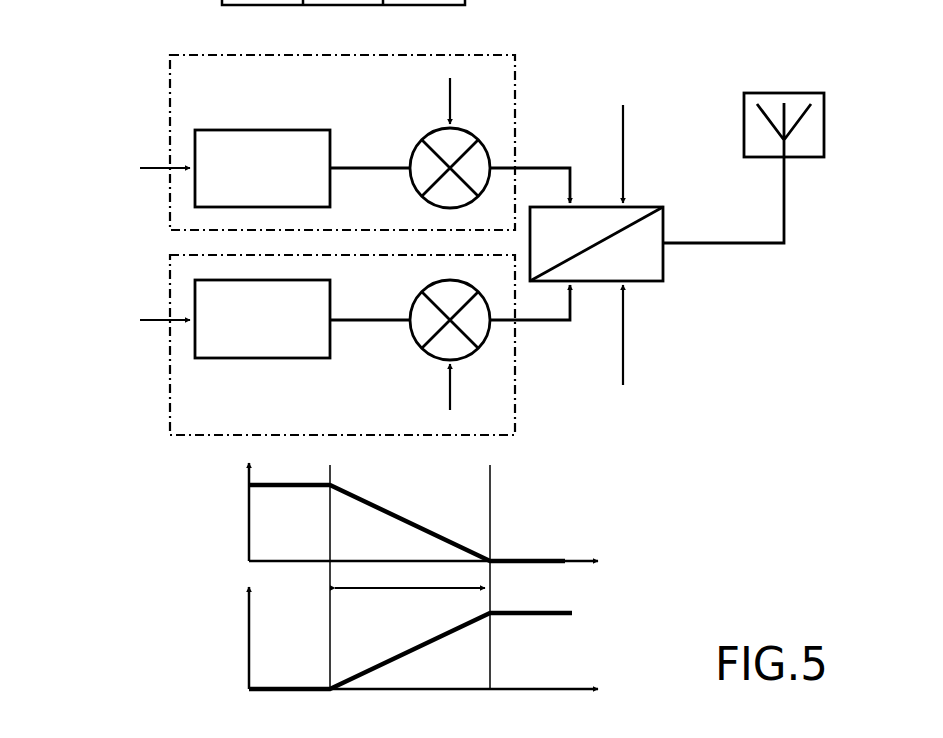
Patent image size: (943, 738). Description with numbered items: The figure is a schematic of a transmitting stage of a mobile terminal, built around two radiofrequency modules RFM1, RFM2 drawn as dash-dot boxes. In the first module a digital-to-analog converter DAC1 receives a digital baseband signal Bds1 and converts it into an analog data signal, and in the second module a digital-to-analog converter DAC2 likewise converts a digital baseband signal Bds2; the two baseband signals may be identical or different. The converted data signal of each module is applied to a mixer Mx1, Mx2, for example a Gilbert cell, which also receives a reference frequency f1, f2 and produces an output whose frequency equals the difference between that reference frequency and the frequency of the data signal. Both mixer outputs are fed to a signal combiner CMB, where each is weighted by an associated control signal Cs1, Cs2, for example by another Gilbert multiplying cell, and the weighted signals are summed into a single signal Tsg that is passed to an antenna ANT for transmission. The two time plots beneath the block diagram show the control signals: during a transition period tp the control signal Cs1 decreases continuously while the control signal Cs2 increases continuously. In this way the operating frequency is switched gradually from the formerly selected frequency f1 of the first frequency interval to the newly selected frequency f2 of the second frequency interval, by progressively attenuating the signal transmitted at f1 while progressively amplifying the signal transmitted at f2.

The first radiofrequency module RFM1 is at (168, 124).
The second radiofrequency module RFM2 is at (168, 372).
The digital-to-analog converter DAC1 is at (262, 168).
The digital-to-analog converter DAC2 is at (262, 319).
The digital baseband signal Bds1 is at (119, 168).
The digital baseband signal Bds2 is at (119, 318).
The mixer Mx1 is at (410, 155).
The mixer Mx2 is at (410, 333).
The reference frequency f1 is at (471, 92).
The reference frequency f2 is at (471, 399).
The control signal Cs1 is at (415, 324).
The control signal Cs2 is at (416, 500).
The signal combiner CMB is at (665, 258).
The single signal to be transmitted Tsg is at (723, 200).
The antenna ANT is at (770, 93).
The transition period tp is at (410, 577).